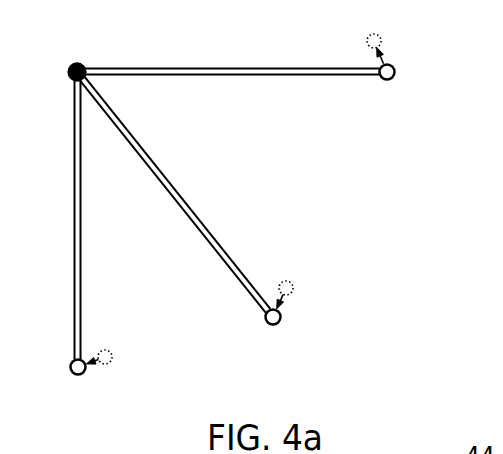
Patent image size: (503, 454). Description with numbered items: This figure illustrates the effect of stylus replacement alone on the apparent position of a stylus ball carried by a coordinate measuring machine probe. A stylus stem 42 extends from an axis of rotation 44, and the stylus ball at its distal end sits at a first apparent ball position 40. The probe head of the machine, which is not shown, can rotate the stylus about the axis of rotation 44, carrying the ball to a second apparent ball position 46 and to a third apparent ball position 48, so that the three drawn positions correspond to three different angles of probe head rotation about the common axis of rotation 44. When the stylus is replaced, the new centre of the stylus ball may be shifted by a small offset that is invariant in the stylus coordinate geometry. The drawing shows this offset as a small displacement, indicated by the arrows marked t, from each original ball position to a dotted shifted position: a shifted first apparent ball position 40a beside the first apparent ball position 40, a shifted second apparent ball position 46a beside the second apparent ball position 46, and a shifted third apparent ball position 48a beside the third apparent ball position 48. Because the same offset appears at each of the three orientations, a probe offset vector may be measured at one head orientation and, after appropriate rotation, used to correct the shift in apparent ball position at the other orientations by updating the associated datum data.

The first apparent ball position 40 is at (80, 376).
The shifted first apparent ball position 40a is at (116, 356).
The stylus stem 42 is at (73, 252).
The axis of rotation 44 is at (75, 65).
The second apparent ball position 46 is at (275, 326).
The shifted second apparent ball position 46a is at (297, 292).
The third apparent ball position 48 is at (389, 81).
The shifted third apparent ball position 48a is at (384, 46).
The translation (displacement) vector t is at (93, 358).